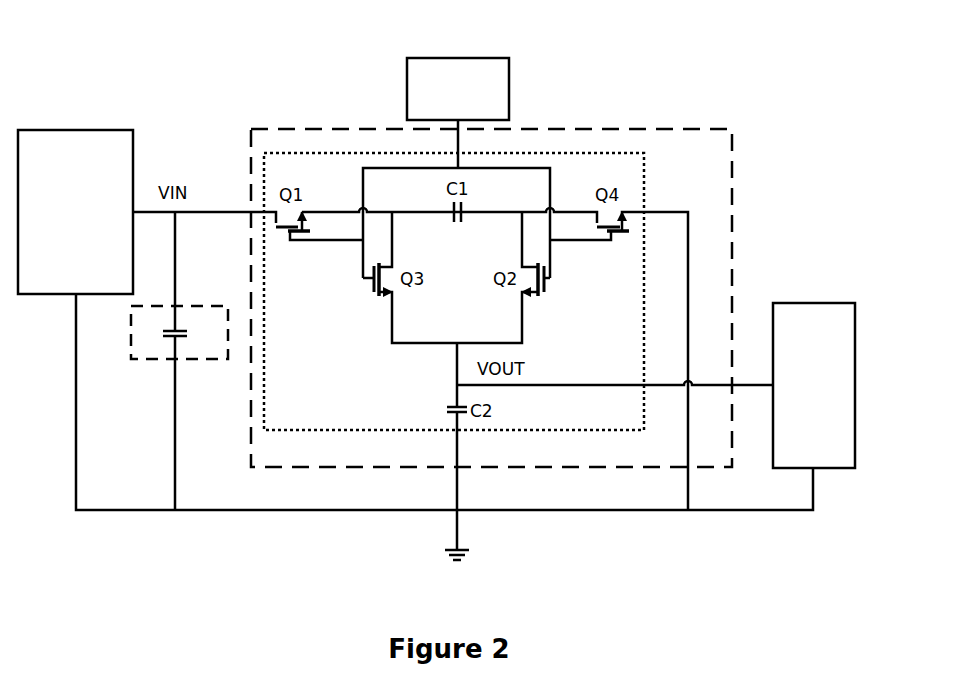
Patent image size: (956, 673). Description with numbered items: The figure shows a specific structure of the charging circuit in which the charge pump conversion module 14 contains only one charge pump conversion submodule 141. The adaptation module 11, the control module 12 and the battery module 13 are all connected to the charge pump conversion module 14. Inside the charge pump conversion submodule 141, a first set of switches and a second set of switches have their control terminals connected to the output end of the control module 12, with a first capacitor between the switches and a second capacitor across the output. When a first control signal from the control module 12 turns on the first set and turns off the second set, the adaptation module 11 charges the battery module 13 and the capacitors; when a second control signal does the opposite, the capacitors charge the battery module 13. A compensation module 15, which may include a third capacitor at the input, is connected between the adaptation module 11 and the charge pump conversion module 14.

The adaptation module 11 is at (75, 128).
The control module 12 is at (458, 58).
The battery module 13 is at (813, 303).
The charge pump conversion module 14 is at (732, 140).
The charge pump conversion submodule 141 is at (648, 180).
The compensation module 15 is at (175, 307).